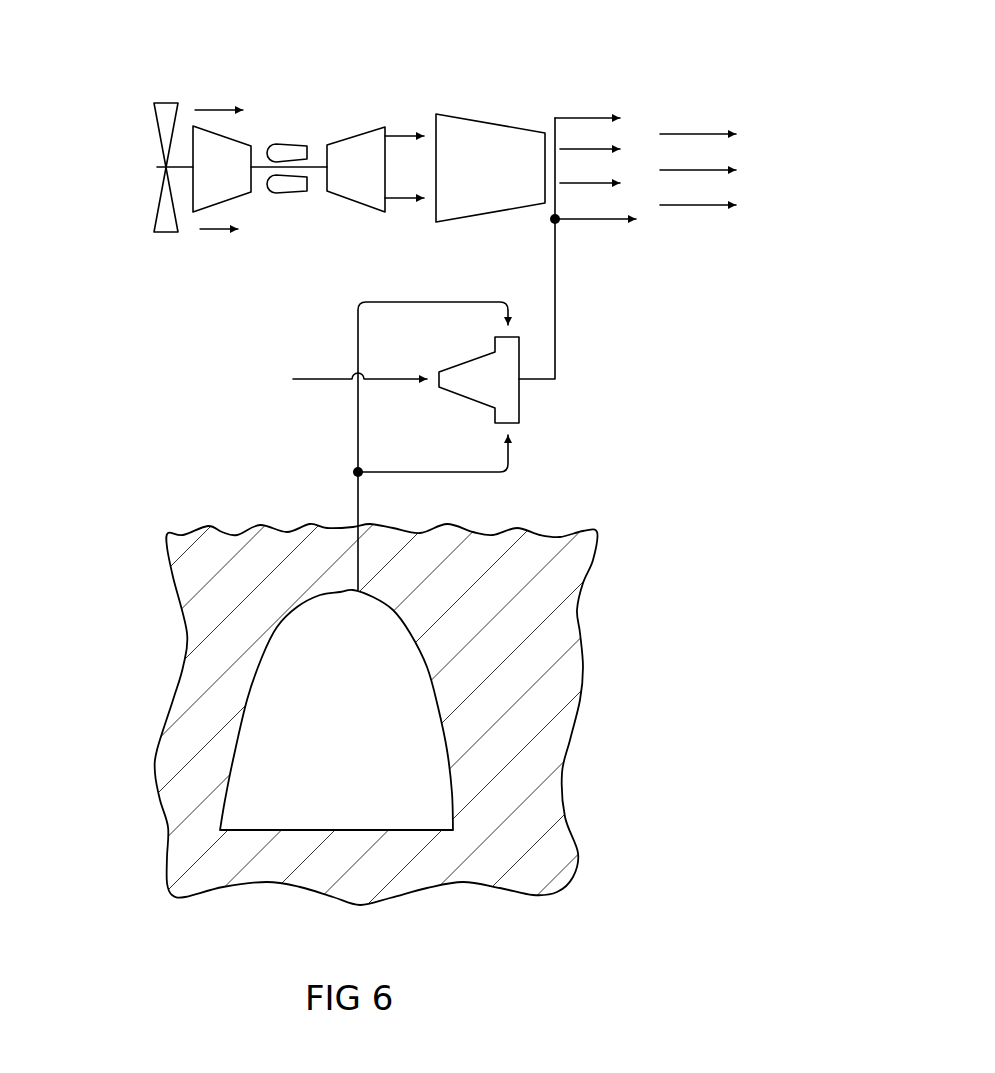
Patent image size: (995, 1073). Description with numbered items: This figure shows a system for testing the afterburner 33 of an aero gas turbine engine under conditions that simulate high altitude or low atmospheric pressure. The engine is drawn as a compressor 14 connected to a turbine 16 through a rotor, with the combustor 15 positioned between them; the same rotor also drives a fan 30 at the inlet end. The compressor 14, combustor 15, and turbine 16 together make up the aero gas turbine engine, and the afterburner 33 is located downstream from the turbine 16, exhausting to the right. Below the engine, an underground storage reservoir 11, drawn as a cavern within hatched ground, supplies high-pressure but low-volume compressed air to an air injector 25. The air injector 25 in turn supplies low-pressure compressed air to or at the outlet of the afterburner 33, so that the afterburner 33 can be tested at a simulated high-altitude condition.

The fan 30 is at (168, 113).
The compressor 14 is at (212, 152).
The combustor 15 is at (282, 148).
The turbine 16 is at (363, 145).
The afterburner 33 is at (485, 145).
The air injector 25 is at (499, 388).
The underground storage reservoir 11 is at (290, 697).